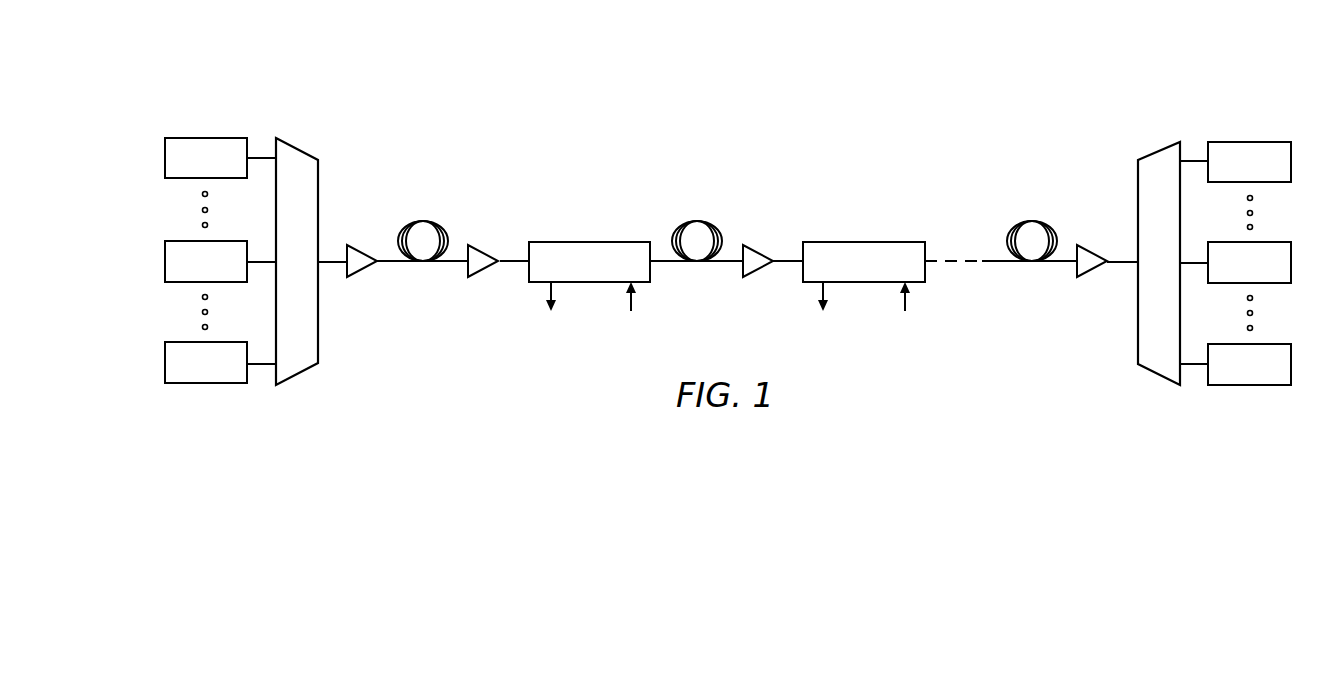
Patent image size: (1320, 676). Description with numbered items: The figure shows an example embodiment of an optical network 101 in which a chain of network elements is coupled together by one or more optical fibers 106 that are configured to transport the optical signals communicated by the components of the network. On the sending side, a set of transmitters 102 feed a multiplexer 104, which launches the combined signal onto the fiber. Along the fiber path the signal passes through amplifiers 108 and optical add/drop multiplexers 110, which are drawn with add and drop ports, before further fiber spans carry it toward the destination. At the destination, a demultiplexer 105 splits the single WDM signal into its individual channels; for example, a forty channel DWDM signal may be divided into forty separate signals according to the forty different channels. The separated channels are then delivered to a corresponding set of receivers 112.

The optical network 101 is at (258, 97).
The transmitter 102 is at (200, 138).
The multiplexer 104 is at (296, 149).
The demultiplexer 105 is at (1160, 151).
The optical fiber 106 is at (422, 221).
The amplifier 108 is at (367, 272).
The optical add/drop multiplexer 110 is at (590, 241).
The receiver 112 is at (1256, 141).